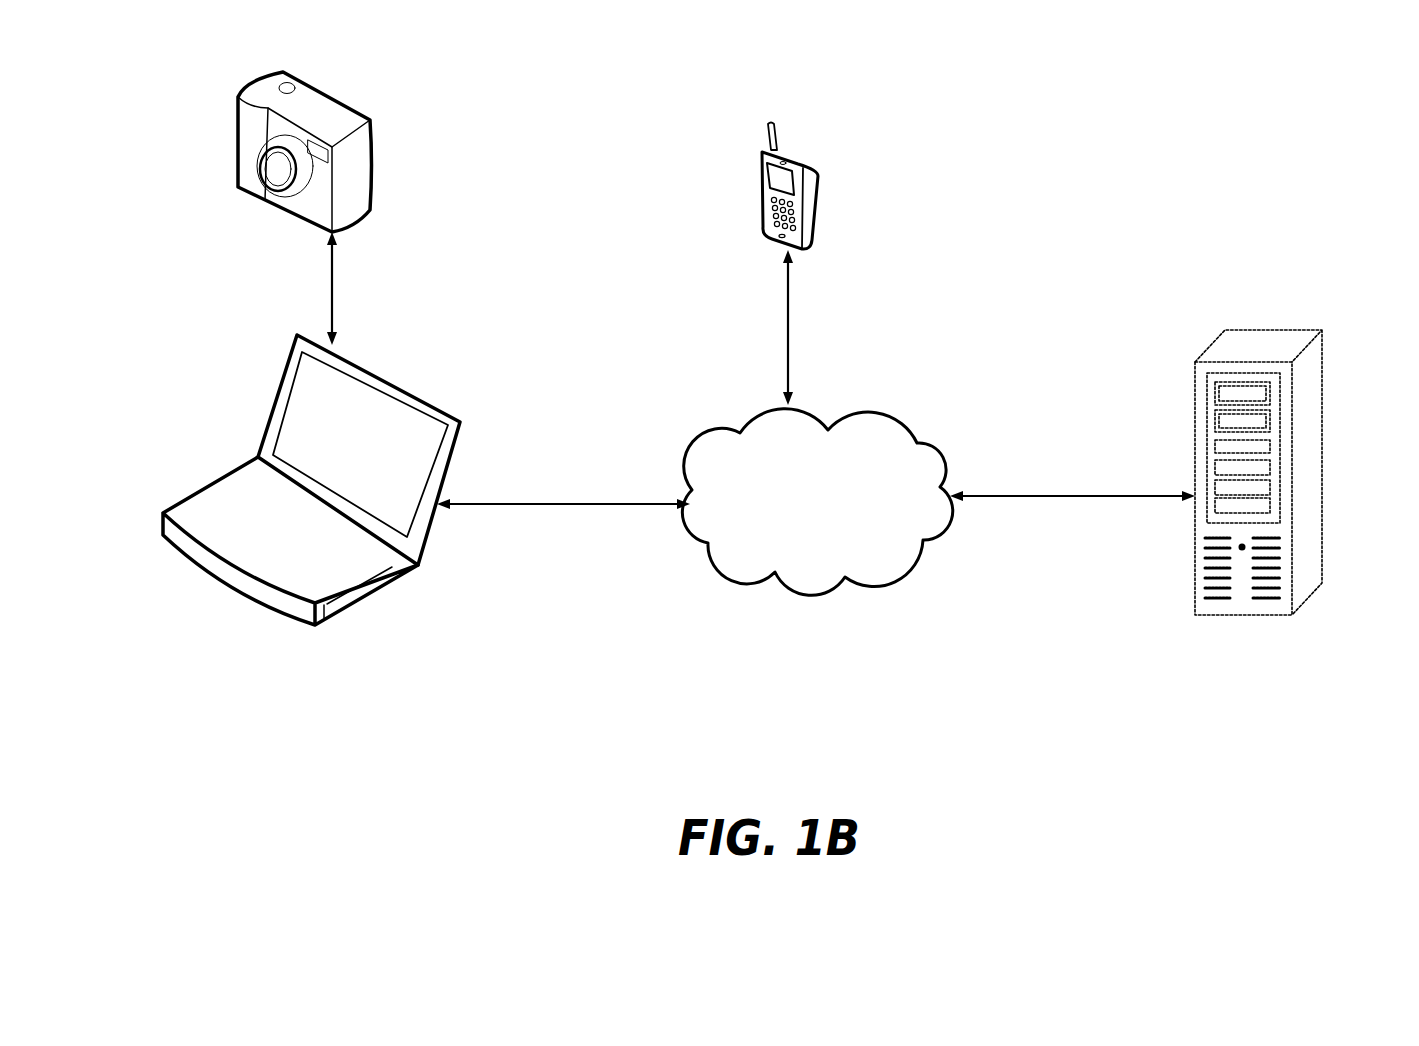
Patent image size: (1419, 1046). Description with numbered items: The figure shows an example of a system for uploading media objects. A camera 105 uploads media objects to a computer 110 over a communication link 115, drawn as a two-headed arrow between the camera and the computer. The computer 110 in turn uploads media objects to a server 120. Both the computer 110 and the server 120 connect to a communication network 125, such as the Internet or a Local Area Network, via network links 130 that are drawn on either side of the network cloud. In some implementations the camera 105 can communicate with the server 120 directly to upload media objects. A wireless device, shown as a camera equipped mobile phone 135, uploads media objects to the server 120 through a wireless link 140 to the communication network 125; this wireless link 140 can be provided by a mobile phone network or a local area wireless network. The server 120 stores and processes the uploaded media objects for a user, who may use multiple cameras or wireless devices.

The camera 105 is at (352, 90).
The computer 110 is at (319, 519).
The communication link 115 is at (430, 387).
The server 120 is at (1332, 412).
The communication network 125 is at (791, 601).
The network links 130 is at (627, 495).
The camera equipped mobile phone 135 is at (831, 187).
The wireless link 140 is at (799, 346).